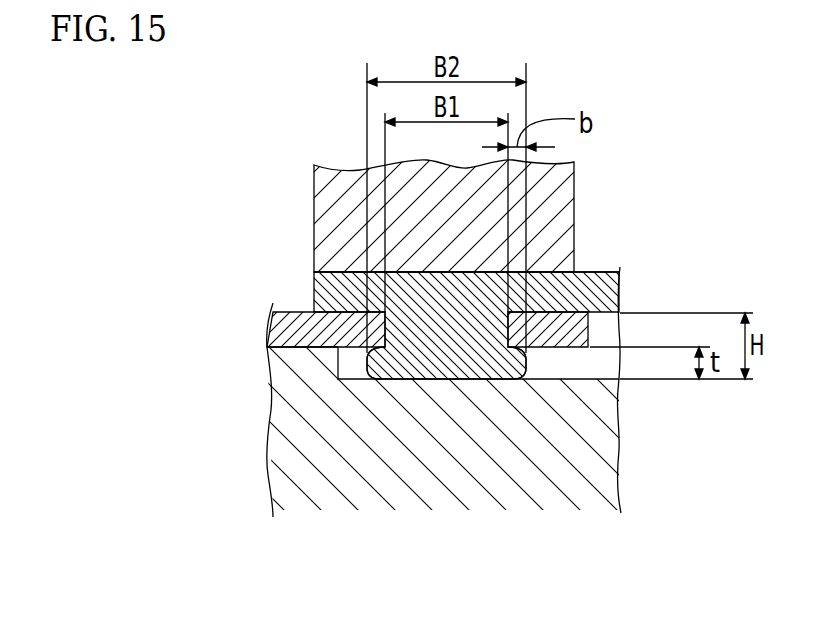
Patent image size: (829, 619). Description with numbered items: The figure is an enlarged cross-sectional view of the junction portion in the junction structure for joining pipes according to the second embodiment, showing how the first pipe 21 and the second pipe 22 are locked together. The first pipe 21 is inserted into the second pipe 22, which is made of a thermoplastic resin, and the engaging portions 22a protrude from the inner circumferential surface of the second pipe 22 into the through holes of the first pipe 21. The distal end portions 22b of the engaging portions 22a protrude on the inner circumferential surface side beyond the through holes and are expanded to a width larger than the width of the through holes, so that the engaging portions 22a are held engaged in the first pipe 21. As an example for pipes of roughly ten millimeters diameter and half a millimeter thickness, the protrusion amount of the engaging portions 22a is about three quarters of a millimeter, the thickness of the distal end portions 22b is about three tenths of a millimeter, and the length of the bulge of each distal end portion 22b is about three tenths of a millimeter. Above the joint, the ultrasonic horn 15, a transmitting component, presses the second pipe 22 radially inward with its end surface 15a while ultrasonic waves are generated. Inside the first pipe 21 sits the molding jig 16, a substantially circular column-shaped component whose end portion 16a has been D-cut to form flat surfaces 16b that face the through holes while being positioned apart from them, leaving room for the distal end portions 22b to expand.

The ultrasonic horn 15 is at (568, 184).
The end surface of the ultrasonic horn 15a is at (568, 283).
The molding jig 16 is at (343, 480).
The end portion of the molding jig 16a is at (607, 440).
The flat surfaces 16b is at (618, 413).
The first pipe 21 is at (283, 313).
The second pipe 22 is at (608, 296).
The engaging portions 22a is at (451, 368).
The distal end portions 22b is at (510, 370).